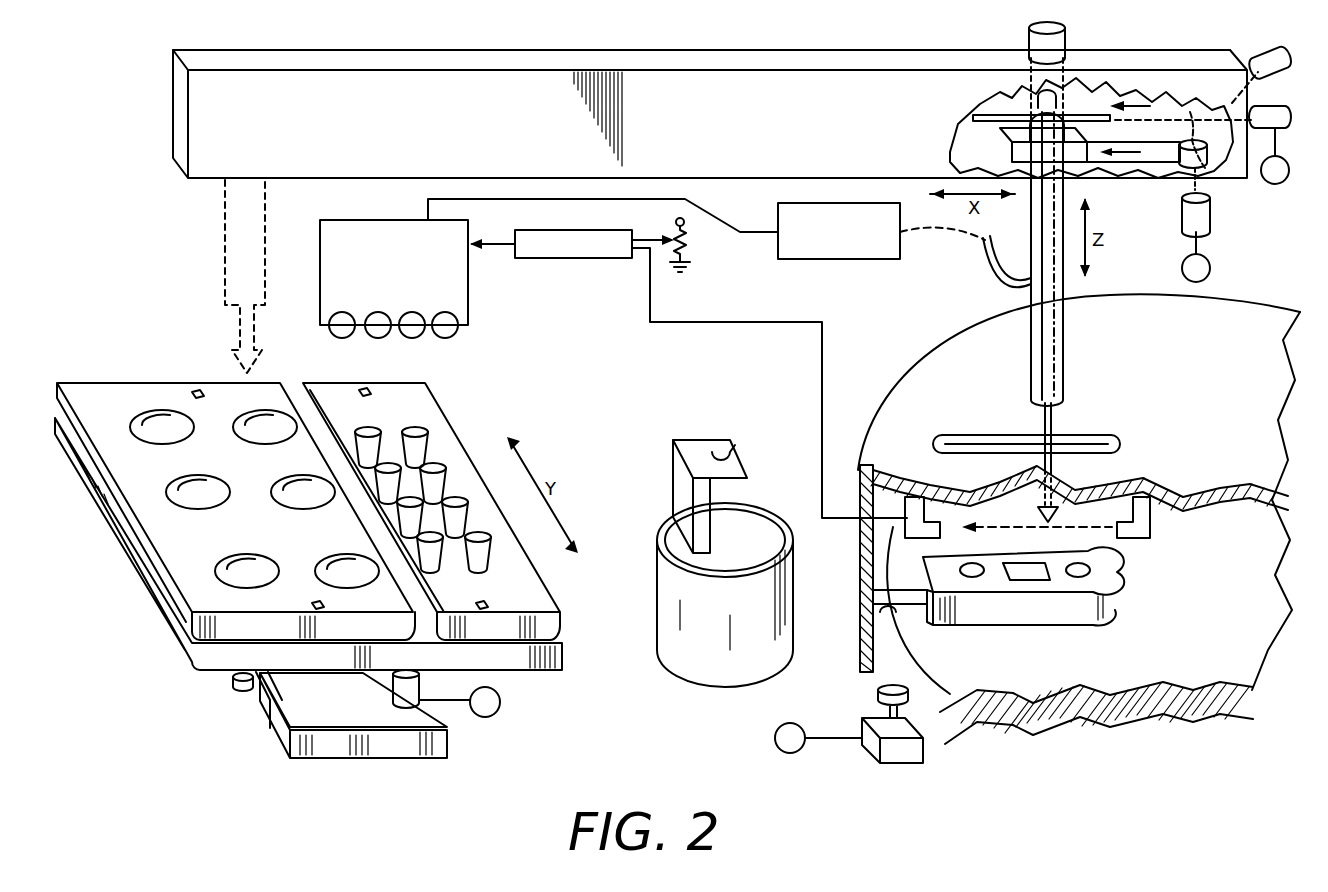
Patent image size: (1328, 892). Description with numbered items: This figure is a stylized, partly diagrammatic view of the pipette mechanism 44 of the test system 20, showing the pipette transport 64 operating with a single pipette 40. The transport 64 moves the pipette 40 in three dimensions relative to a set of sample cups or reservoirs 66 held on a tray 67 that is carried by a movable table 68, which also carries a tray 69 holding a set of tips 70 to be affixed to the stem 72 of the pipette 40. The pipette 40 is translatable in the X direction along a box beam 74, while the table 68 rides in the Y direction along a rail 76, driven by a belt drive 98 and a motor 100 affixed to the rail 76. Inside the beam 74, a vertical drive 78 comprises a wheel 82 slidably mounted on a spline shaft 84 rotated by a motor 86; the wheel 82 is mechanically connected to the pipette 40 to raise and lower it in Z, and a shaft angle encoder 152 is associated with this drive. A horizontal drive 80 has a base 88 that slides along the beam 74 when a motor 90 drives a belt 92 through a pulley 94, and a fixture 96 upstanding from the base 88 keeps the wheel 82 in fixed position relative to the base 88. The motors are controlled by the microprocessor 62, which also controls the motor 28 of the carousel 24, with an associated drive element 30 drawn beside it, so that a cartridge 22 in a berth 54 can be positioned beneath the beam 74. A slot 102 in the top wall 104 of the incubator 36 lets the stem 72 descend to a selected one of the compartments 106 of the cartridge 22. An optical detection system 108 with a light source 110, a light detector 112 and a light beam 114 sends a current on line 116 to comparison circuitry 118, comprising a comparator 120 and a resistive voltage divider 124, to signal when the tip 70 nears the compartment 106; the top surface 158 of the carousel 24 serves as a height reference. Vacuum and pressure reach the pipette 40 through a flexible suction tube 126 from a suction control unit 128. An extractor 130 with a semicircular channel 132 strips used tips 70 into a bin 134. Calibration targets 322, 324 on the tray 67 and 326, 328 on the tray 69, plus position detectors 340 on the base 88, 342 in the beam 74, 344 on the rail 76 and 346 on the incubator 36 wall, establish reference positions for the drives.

The test system 20 is at (138, 300).
The cartridge 22 is at (990, 626).
The carousel 24 is at (1062, 722).
The motor 28 is at (906, 763).
The drive pin 30 is at (878, 690).
The incubator 36 is at (947, 354).
The pipette 40 is at (1065, 350).
The pipette mechanism 44 is at (1233, 270).
The berth 54 is at (920, 630).
The microprocessor 62 is at (362, 221).
The pipette transport 64 is at (728, 48).
The sample cups or reservoirs 66 is at (284, 424).
The tray 67 is at (107, 383).
The movable table 68 is at (565, 656).
The tray 69 is at (433, 410).
The tips 70 is at (1058, 512).
The stem 72 is at (1055, 432).
The box beam 74 is at (461, 50).
The rail 76 is at (264, 710).
The vertical drive 78 is at (1190, 88).
The horizontal drive 80 is at (1172, 166).
The wheel 82 is at (1020, 100).
The spline shaft 84 is at (1086, 120).
The motor 86 is at (1276, 106).
The base 88 is at (1012, 140).
The motor 90 is at (1212, 216).
The belt 92 is at (1191, 110).
The pulley 94 is at (1222, 162).
The fixture 96 is at (1086, 160).
The belt drive 98 is at (420, 690).
The motor 100 is at (447, 735).
The slot 102 is at (985, 440).
The top wall 104 is at (1213, 505).
The compartments 106 is at (1025, 581).
The optical detection system 108 is at (1157, 552).
The source of light 110 is at (1151, 530).
The light detector 112 is at (941, 530).
The light beam 114 is at (1096, 530).
The line 116 is at (745, 322).
The electrical comparison circuitry 118 is at (530, 336).
The comparator 120 is at (572, 230).
The resistive voltage divider 124 is at (690, 260).
The suction tube 126 is at (996, 266).
The suction control unit 128 is at (853, 259).
The extractor 130 is at (700, 440).
The semicircular channel 132 is at (736, 462).
The bin 134 is at (715, 665).
The shaft angle encoder 152 is at (1266, 52).
The top surface 158 is at (1150, 706).
The target 322 is at (196, 392).
The target 324 is at (316, 603).
The target 326 is at (363, 389).
The target 328 is at (480, 602).
The optical position detector 340 is at (1000, 118).
The position detector 342 is at (1097, 146).
The position detector 344 is at (236, 684).
The position detector 346 is at (862, 625).